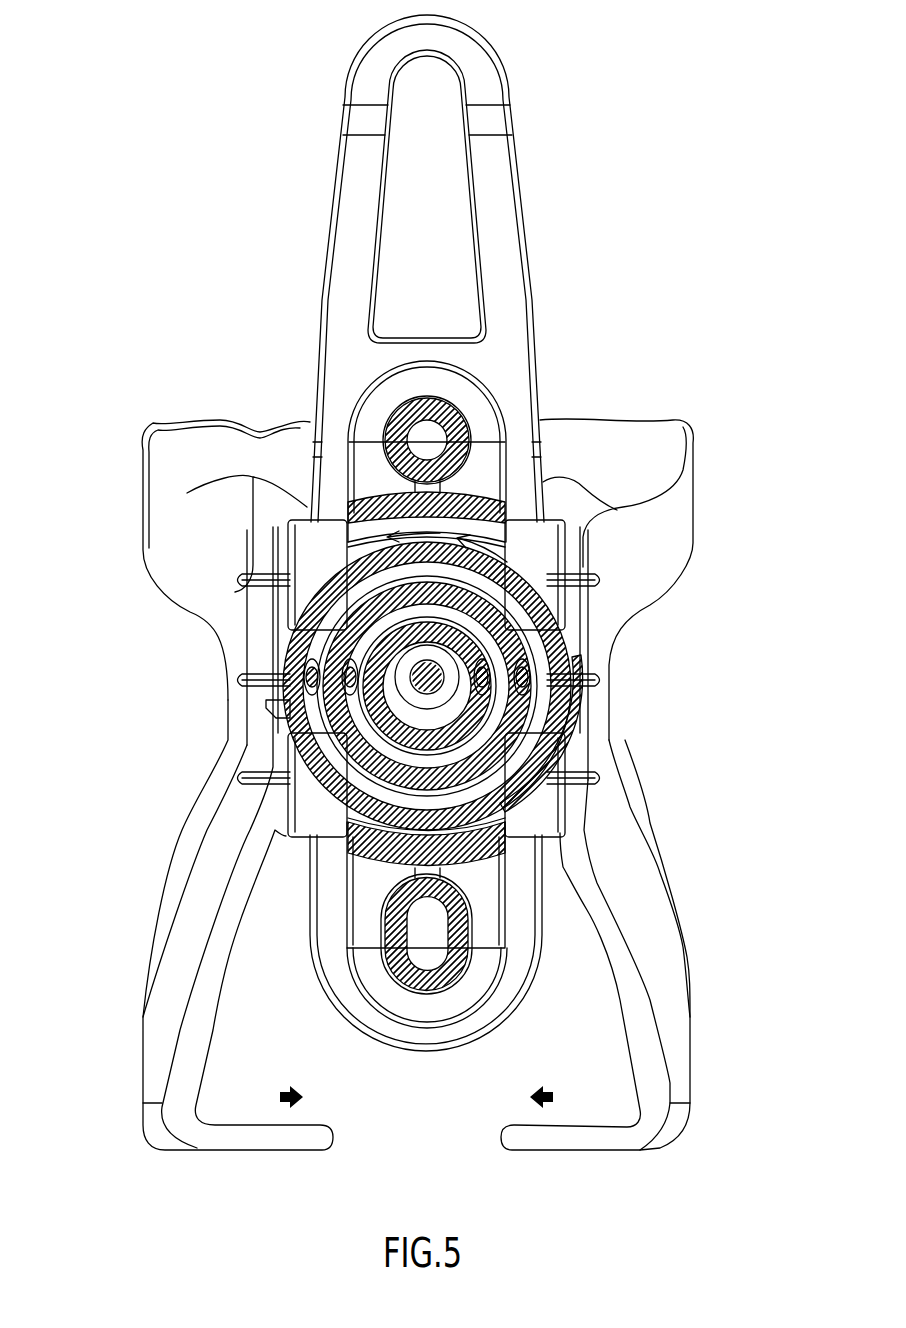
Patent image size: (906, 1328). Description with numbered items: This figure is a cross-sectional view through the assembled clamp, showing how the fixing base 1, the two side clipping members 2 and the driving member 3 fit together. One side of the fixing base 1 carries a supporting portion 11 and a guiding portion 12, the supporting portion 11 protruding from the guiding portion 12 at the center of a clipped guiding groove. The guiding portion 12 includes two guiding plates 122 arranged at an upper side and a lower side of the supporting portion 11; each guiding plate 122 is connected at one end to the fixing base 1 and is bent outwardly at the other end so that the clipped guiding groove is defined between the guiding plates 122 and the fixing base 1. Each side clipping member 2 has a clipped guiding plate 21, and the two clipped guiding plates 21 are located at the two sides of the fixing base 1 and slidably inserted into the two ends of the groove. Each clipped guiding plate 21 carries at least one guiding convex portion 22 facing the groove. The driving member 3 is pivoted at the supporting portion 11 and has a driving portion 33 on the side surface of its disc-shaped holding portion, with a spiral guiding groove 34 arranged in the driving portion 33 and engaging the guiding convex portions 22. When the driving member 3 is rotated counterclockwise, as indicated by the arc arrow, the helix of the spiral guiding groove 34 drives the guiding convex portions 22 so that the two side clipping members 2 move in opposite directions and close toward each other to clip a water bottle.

The fixing base 1 is at (498, 180).
The side clipping member 2 is at (153, 512).
The driving member 3 is at (453, 690).
The supporting portion 11 is at (427, 712).
The guiding portion 12 is at (417, 653).
The guiding plate 122 is at (306, 553).
The clipped guiding plate 21 is at (272, 645).
The guiding convex portion 22 is at (265, 690).
The driving portion 33 is at (575, 722).
The spiral guiding groove 34 is at (520, 766).